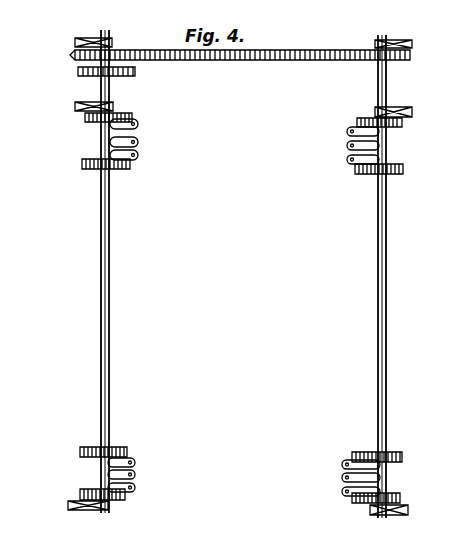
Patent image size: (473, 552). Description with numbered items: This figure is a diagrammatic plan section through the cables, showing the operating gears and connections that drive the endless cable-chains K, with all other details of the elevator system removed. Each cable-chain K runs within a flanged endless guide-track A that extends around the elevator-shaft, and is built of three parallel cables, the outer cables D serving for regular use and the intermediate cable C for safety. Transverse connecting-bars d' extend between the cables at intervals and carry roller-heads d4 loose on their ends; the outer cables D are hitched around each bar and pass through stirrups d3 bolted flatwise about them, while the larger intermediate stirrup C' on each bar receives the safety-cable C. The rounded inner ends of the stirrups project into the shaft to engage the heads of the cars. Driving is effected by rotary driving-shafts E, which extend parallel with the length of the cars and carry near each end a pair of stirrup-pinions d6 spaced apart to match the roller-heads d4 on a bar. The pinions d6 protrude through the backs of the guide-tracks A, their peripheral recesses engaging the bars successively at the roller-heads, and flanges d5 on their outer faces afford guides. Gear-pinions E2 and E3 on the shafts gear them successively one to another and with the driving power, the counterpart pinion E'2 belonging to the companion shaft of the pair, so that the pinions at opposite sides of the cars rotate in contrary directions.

The rotary driving-shaft E is at (243, 274).
The gear-pinion E2 is at (73, 53).
The rack bar right portion E'2 is at (361, 74).
The gear-pinion E3 is at (78, 69).
The cable D is at (125, 122).
The flange d5 is at (88, 113).
The stirrup-pinion d6 is at (113, 114).
The roller-head d4 is at (128, 120).
The connecting-bar d' is at (148, 134).
The safety-cable stirrup C' is at (174, 152).
The stirrup d3 is at (136, 128).
The safety-cable C is at (203, 155).
The cable-chain K is at (136, 475).
The guide-track A is at (6, 427).